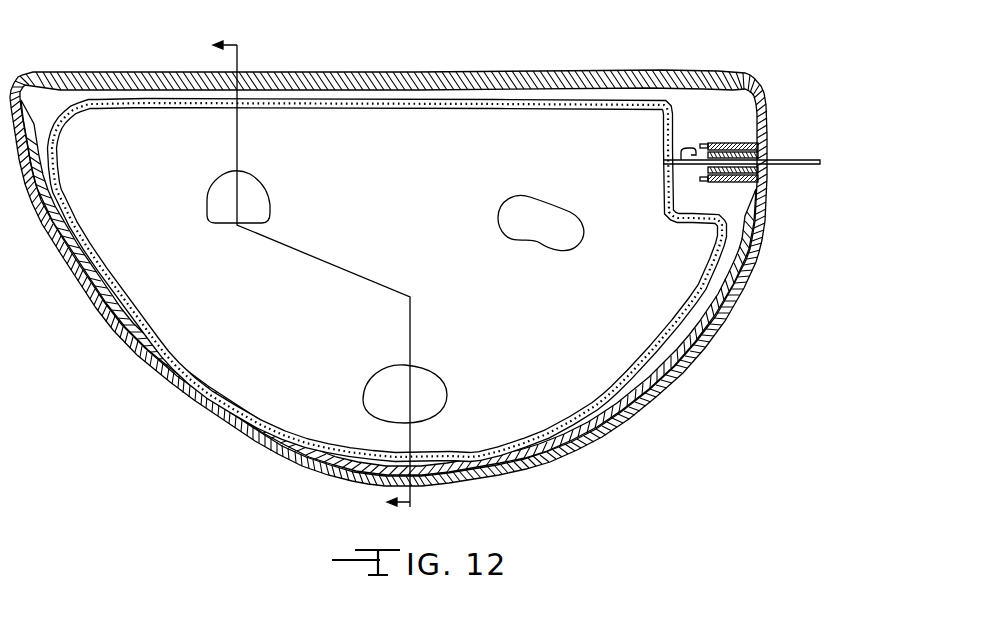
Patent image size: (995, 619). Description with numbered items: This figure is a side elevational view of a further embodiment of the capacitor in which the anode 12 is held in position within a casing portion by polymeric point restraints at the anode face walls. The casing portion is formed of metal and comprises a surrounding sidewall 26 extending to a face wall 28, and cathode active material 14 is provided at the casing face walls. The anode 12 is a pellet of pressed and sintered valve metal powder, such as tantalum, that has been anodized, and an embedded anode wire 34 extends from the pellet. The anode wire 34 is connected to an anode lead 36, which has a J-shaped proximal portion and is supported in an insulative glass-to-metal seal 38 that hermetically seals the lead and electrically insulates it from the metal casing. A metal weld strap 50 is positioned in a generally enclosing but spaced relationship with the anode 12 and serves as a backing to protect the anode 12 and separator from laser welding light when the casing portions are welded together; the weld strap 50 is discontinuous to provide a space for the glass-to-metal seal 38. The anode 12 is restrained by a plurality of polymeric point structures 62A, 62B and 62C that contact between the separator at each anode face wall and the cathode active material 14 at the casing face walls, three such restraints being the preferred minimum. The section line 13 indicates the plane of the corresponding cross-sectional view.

The anode 12 is at (394, 252).
The section line 13- 13 is at (325, 273).
The cathode active material 14 is at (716, 212).
The surrounding sidewall 26 is at (407, 54).
The face wall 28 is at (757, 116).
The anode wire 34 is at (665, 204).
The anode lead 36 is at (808, 161).
The glass-to-metal seal 38 is at (776, 148).
The weld strap 50 is at (670, 83).
The polymeric point structure 62A is at (541, 212).
The polymeric point structure 62B is at (253, 198).
The polymeric point structure 62C is at (433, 393).